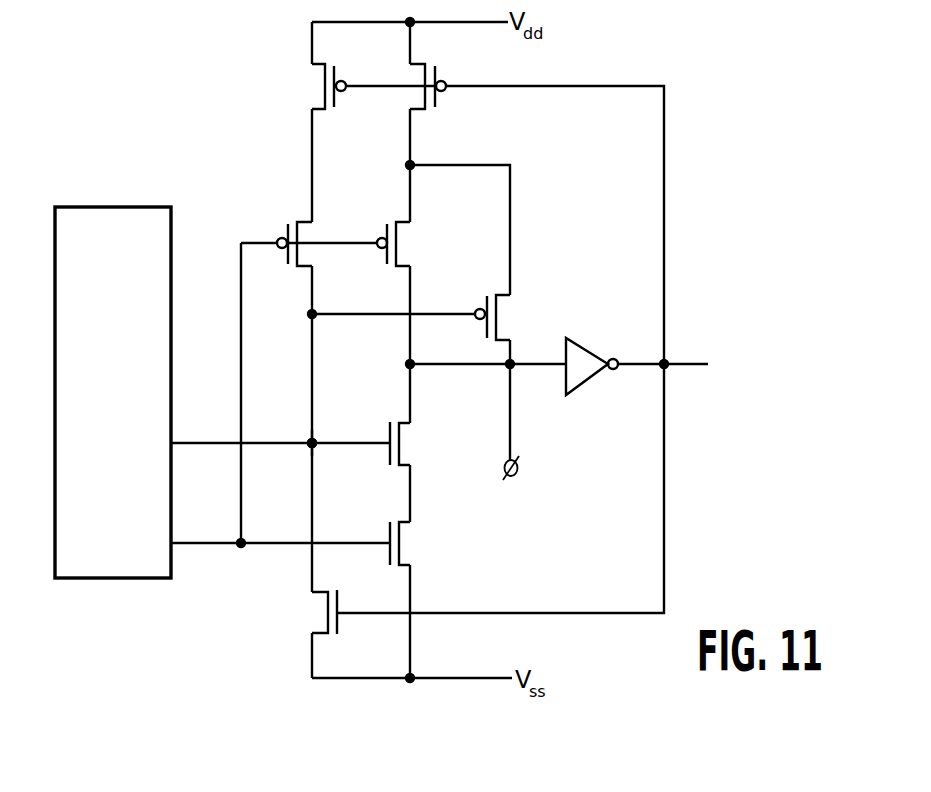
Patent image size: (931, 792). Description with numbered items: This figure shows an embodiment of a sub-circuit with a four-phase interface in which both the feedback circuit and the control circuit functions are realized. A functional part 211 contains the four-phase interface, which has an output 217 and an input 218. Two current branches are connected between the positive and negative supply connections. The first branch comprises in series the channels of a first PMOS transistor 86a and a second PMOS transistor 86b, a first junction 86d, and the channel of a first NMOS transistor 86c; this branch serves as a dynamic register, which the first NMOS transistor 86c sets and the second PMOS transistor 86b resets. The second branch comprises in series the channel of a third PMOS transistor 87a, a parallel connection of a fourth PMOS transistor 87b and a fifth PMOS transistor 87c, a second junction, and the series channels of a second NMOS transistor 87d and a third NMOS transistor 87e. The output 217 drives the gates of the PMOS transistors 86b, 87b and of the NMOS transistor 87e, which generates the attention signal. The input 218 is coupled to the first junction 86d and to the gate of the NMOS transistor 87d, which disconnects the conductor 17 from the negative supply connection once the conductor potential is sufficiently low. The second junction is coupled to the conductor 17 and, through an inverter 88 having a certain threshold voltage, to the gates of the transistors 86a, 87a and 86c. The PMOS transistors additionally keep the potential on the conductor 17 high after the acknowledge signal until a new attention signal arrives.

The functional part 211 is at (103, 206).
The input of the four-phase interface 218 is at (203, 440).
The output of the four-phase interface 217 is at (204, 541).
The first PMOS transistor 86a is at (311, 85).
The second PMOS transistor 86b is at (288, 227).
The first NMOS transistor 86c is at (312, 614).
The first junction 86d is at (311, 440).
The third PMOS transistor 87a is at (438, 72).
The fourth PMOS transistor 87b is at (412, 246).
The fifth PMOS transistor 87c is at (514, 315).
The second NMOS transistor 87d is at (411, 450).
The third NMOS transistor 87e is at (411, 546).
The inverter 88 is at (592, 352).
The conductor 17 is at (513, 437).